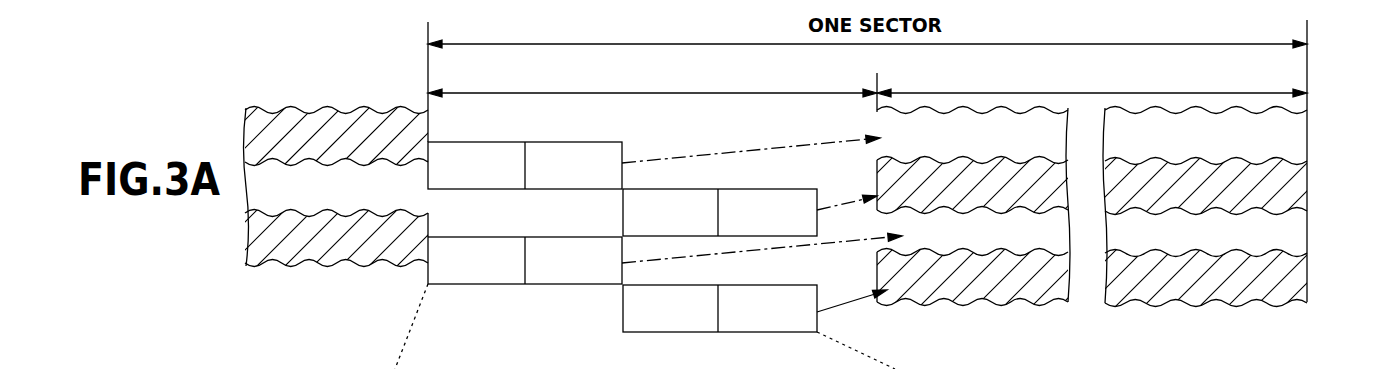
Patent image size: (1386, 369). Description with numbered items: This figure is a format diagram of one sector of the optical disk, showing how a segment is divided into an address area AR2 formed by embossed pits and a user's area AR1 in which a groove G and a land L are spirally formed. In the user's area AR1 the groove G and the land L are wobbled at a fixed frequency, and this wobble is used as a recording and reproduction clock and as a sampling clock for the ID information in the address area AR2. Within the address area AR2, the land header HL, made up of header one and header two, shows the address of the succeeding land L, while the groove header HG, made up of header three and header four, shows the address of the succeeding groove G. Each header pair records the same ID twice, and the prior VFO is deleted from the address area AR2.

The land header HL is at (428, 142).
The groove header HG is at (817, 189).
The address area AR2 is at (652, 80).
The user's area AR1 is at (1092, 88).
The land L is at (1296, 134).
The groove G is at (1296, 188).